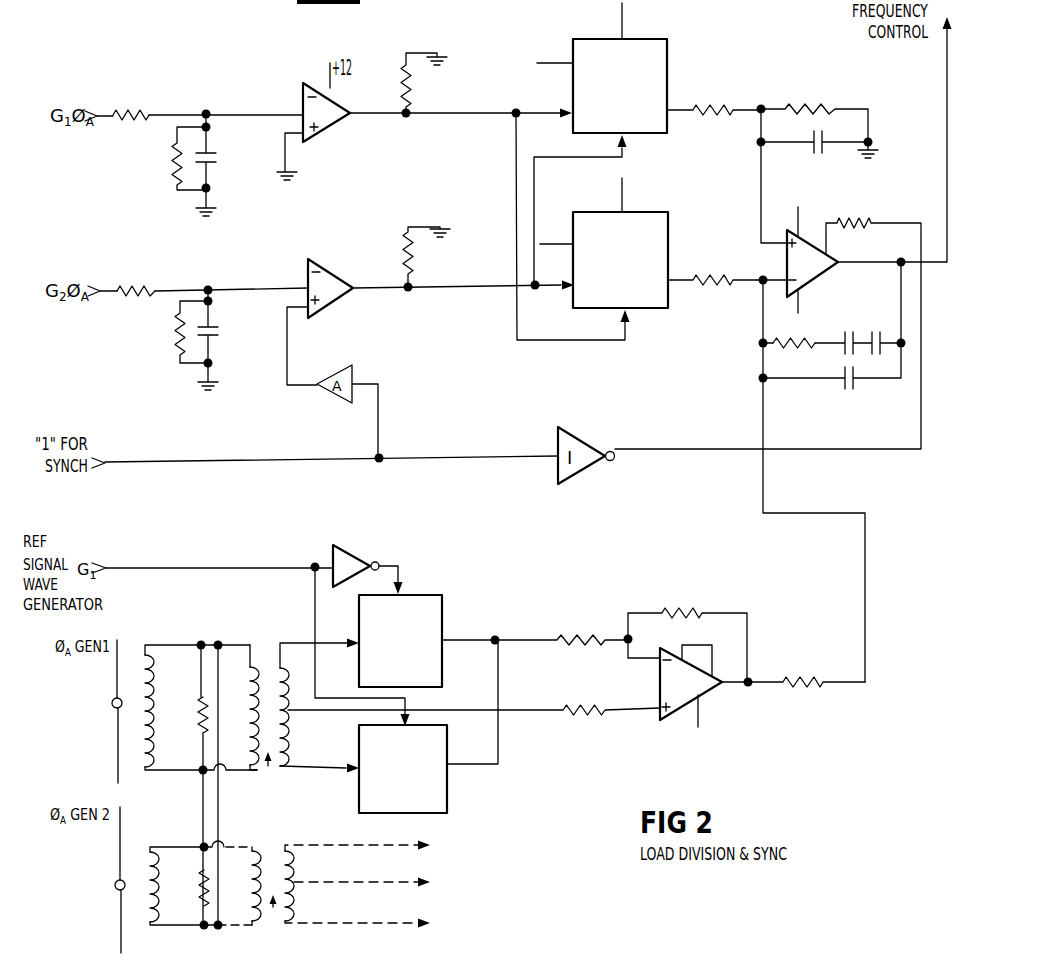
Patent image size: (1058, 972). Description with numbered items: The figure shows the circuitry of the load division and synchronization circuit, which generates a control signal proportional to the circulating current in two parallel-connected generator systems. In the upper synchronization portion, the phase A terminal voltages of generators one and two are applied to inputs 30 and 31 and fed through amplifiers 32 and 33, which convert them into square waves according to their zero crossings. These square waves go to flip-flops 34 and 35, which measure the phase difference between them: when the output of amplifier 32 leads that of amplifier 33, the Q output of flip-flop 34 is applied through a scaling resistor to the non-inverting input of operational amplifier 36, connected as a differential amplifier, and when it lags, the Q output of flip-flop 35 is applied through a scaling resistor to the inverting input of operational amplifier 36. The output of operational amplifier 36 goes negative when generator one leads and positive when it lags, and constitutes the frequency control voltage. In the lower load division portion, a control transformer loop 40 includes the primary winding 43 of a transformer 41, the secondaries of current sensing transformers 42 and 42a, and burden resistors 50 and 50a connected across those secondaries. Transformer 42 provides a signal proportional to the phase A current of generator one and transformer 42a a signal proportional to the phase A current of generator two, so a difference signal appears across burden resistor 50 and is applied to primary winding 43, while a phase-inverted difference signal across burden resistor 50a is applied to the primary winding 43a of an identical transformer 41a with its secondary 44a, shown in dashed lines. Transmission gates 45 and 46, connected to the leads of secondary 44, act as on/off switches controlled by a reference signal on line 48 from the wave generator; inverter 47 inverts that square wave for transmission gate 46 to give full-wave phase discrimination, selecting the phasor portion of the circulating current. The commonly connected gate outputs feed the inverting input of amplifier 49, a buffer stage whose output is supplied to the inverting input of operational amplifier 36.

The input 30 is at (107, 114).
The input 31 is at (113, 290).
The amplifier 32 is at (335, 125).
The amplifier 33 is at (338, 278).
The flip-flop 34 is at (667, 62).
The flip-flop 35 is at (668, 242).
The operational amplifier 36 is at (838, 265).
The control transformer loop 40 is at (230, 785).
The transformer 41 is at (270, 777).
The transformer 41a is at (277, 916).
The current sensing transformer 42 is at (128, 655).
The current sensing transformer 42a is at (131, 862).
The primary winding 43 is at (252, 655).
The primary winding 43a is at (253, 847).
The secondary 44 is at (291, 735).
The secondary 44a is at (292, 895).
The transmission gate 45 is at (447, 792).
The transmission gate 46 is at (443, 613).
The inverter 47 is at (353, 549).
The line 48 is at (128, 566).
The amplifier 49 is at (669, 722).
The burden resistor 50 is at (198, 718).
The burden resistor 50a is at (200, 873).